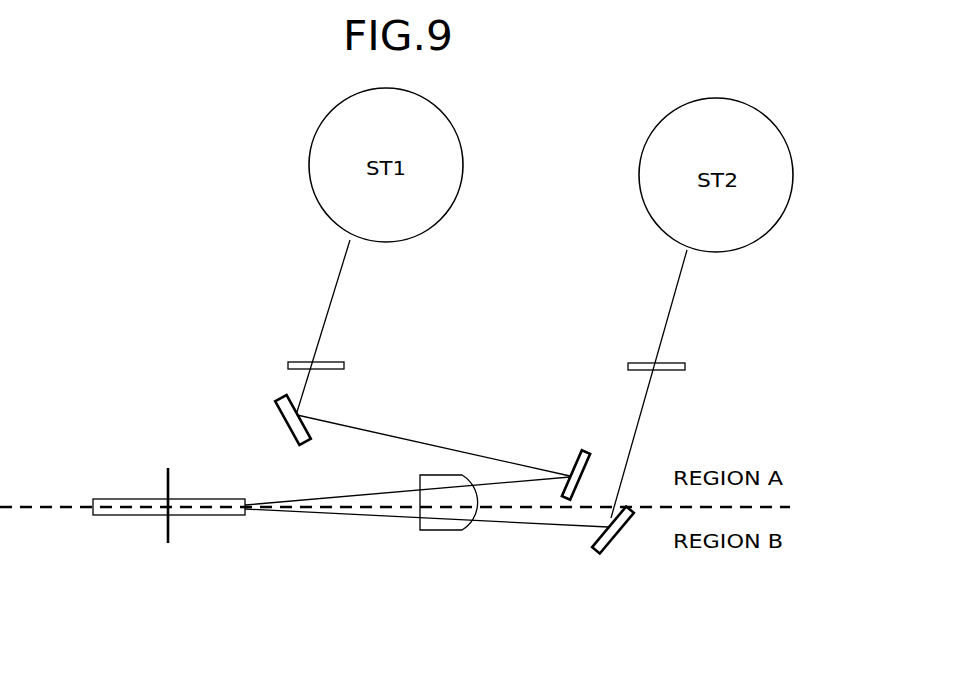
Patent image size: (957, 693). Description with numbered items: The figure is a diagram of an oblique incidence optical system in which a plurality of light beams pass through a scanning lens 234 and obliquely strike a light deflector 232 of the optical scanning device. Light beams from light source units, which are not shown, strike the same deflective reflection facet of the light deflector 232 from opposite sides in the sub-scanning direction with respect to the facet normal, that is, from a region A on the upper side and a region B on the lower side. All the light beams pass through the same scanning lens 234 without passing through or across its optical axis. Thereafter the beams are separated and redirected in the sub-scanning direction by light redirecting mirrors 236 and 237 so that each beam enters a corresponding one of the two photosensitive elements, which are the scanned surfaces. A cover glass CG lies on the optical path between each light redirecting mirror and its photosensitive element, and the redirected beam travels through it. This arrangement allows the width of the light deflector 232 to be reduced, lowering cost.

The light deflector 232 is at (203, 516).
The scanning lens 234 is at (440, 531).
The light redirecting mirror 236 is at (276, 422).
The light redirecting mirror 237 is at (568, 458).
The cover glass CG is at (336, 362).